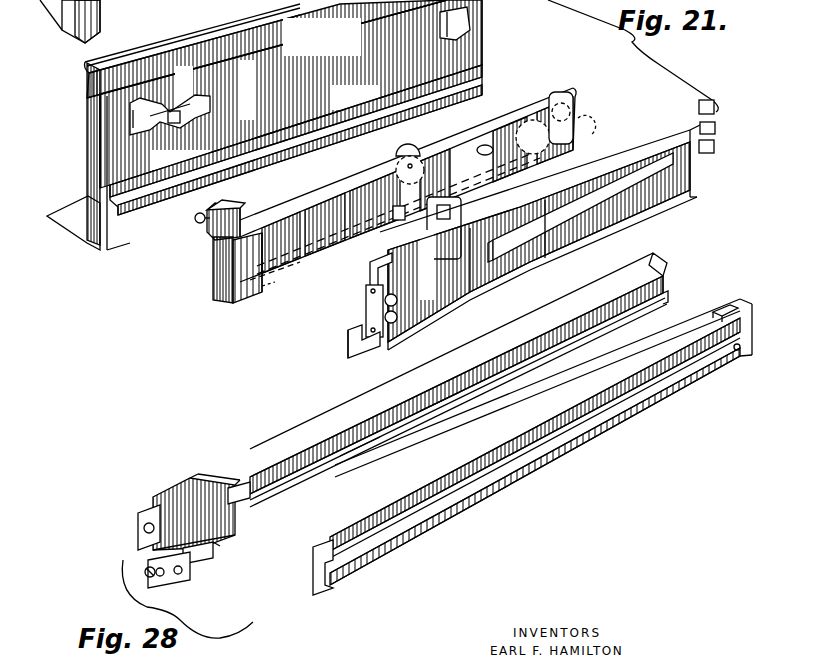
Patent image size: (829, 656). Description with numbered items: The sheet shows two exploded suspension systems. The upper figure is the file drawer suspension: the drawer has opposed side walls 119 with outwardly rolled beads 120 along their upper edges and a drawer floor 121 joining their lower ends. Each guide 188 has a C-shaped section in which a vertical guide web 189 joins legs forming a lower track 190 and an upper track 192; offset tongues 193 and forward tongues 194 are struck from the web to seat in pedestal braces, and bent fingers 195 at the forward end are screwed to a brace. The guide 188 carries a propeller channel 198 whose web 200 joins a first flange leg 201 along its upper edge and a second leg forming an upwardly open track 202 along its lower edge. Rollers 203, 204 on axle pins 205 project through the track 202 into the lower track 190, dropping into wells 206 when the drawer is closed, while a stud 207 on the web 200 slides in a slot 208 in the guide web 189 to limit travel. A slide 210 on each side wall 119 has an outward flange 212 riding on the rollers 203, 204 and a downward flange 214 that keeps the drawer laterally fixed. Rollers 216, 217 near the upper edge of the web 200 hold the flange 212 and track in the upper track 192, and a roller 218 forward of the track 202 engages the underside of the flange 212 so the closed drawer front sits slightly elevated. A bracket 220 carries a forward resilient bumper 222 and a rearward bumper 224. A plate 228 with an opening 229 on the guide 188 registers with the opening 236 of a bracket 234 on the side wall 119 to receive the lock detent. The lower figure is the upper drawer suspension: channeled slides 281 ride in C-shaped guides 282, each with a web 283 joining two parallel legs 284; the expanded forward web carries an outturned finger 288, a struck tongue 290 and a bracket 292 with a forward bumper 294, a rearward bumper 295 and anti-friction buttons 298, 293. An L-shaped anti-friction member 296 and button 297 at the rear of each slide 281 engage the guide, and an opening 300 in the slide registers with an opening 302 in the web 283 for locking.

In FIG. 21, the side walls 119 is at (330, 46).
In FIG. 21, the outwardly rolled beads 120 is at (141, 46).
In FIG. 21, the drawer floor 121 is at (70, 213).
In FIG. 21, the guides 188 is at (485, 298).
In FIG. 21, the guide web 189 is at (470, 275).
In FIG. 21, the lower track 190 is at (356, 348).
In FIG. 21, the upper track 192 is at (385, 258).
In FIG. 21, the offset tongues 193 is at (716, 150).
In FIG. 21, the tongues 194 is at (398, 318).
In FIG. 21, the fingers 195 is at (385, 333).
In FIG. 21, the propeller channel 198 is at (576, 111).
In FIG. 21, the propeller web 200 is at (310, 238).
In FIG. 21, the first flange leg 201 is at (314, 207).
In FIG. 21, the track 202 is at (280, 284).
In FIG. 21, the roller 203 is at (531, 115).
In FIG. 21, the roller 204 is at (440, 152).
In FIG. 21, the axle pins 205 is at (589, 132).
In FIG. 21, the wells 206 is at (650, 197).
In FIG. 21, the stud 207 is at (485, 130).
In FIG. 21, the slot 208 is at (628, 205).
In FIG. 21, the slide 210 is at (494, 40).
In FIG. 21, the flange 212 is at (357, 136).
In FIG. 21, the flange 214 is at (136, 214).
In FIG. 21, the roller 216 is at (408, 152).
In FIG. 21, the roller 217 is at (562, 90).
In FIG. 21, the roller 218 is at (235, 300).
In FIG. 21, the bracket 220 is at (243, 205).
In FIG. 21, the resilient bumper 222 is at (199, 222).
In FIG. 21, the bumper 224 is at (238, 213).
In FIG. 21, the plate 228 is at (407, 240).
In FIG. 21, the opening 229 is at (462, 205).
In FIG. 21, the bracket 234 is at (205, 95).
In FIG. 21, the opening 236 is at (165, 133).
In FIG. 28, the channeled slides 281 is at (382, 556).
In FIG. 28, the guides 282 is at (323, 443).
In FIG. 28, the guide web 283 is at (355, 450).
In FIG. 28, the guide legs 284 is at (437, 407).
In FIG. 28, the outturned finger 288 is at (140, 520).
In FIG. 28, the tongue 290 is at (190, 478).
In FIG. 28, the bracket 292 is at (230, 538).
In FIG. 28, the anti-friction button 293 is at (185, 574).
In FIG. 28, the bumper 294 is at (148, 565).
In FIG. 28, the bumper 295 is at (215, 548).
In FIG. 28, the anti-friction member 296 is at (724, 308).
In FIG. 28, the anti-friction button 297 is at (741, 350).
In FIG. 28, the anti-friction button 298 is at (215, 558).
In FIG. 28, the opening 300 is at (320, 565).
In FIG. 28, the opening 302 is at (232, 497).